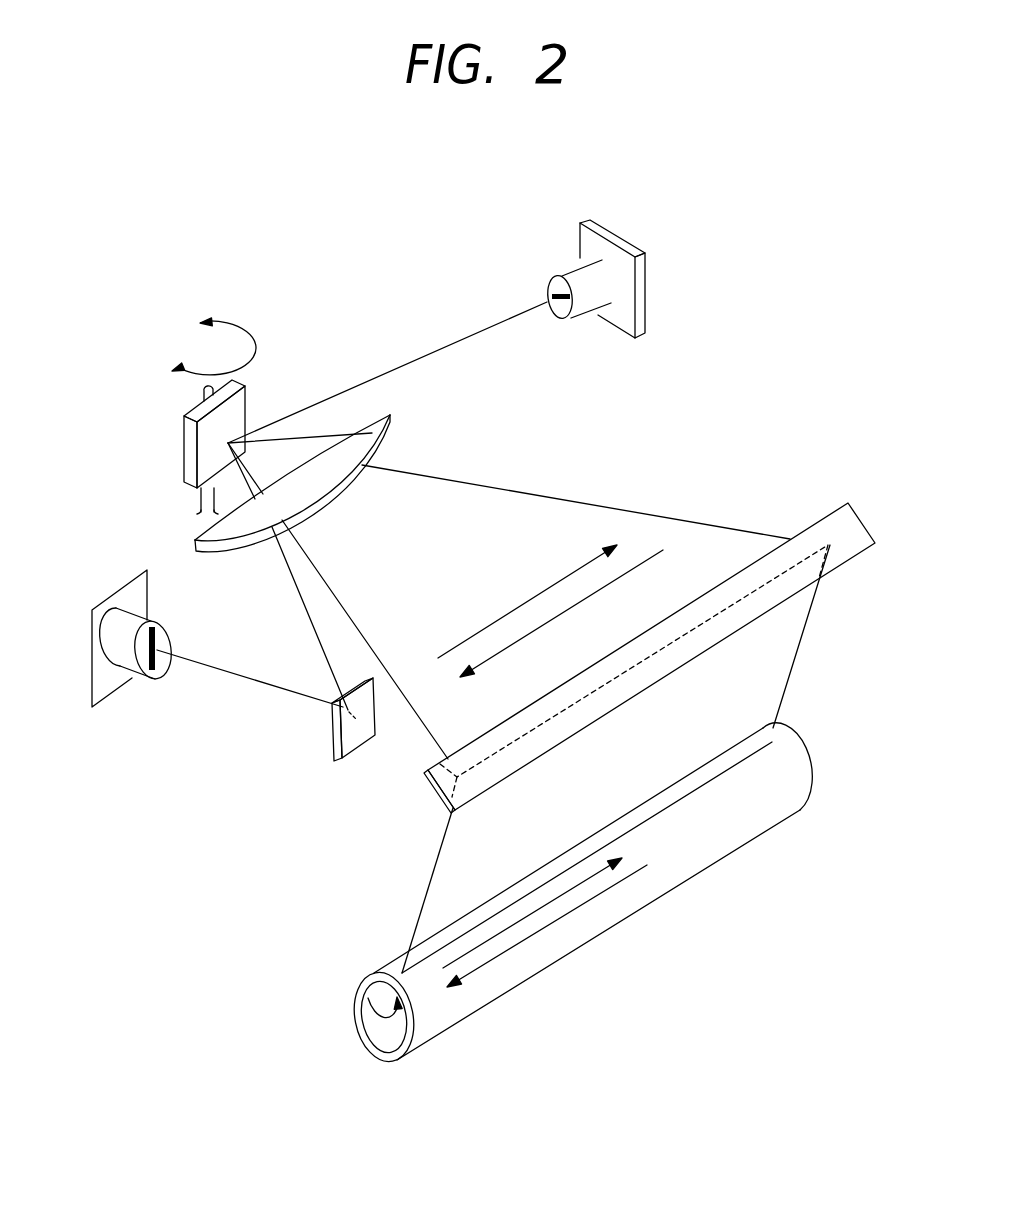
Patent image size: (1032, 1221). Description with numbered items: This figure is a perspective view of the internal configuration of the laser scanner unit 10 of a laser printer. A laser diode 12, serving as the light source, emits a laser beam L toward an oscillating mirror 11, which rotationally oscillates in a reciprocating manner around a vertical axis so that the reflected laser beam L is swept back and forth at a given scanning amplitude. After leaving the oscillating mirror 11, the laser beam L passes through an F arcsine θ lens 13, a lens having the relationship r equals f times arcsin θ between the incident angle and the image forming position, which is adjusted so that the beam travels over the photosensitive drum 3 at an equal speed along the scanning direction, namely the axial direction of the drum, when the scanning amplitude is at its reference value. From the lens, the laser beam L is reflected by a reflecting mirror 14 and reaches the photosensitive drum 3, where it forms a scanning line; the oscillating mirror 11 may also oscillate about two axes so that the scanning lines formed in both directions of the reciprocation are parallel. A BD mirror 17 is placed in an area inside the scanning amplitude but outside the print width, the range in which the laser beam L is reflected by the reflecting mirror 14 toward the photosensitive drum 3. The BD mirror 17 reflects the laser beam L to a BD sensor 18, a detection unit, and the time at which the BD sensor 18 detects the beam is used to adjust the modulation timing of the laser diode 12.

The laser scanner unit 10 is at (797, 210).
The laser diode 12 is at (645, 277).
The oscillating mirror 11 is at (190, 447).
The F arcsine θ lens 13 is at (373, 434).
The laser beam L is at (680, 518).
The reflecting mirror 14 is at (862, 523).
The photosensitive drum 3 is at (750, 825).
The BD mirror 17 is at (353, 742).
The BD sensor 18 is at (92, 683).